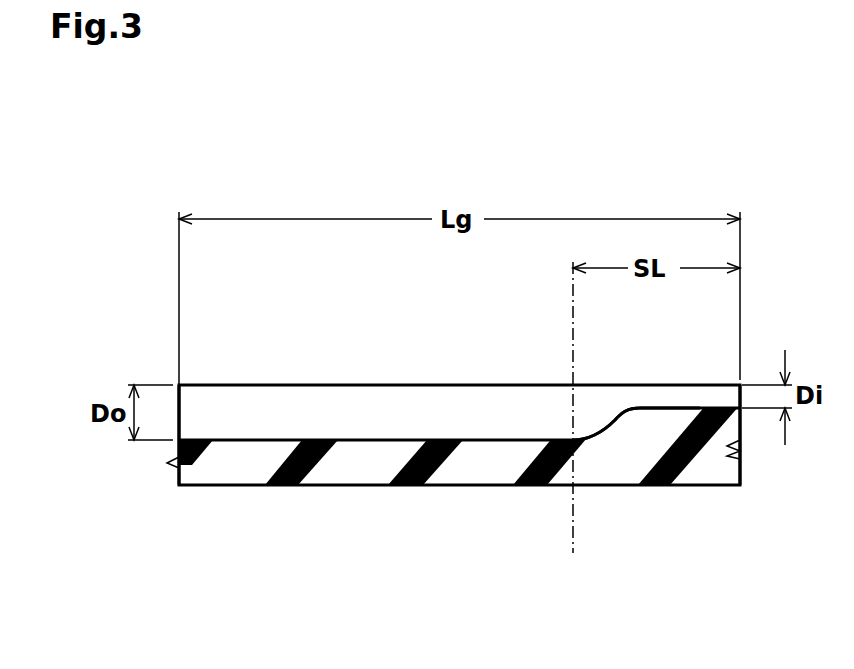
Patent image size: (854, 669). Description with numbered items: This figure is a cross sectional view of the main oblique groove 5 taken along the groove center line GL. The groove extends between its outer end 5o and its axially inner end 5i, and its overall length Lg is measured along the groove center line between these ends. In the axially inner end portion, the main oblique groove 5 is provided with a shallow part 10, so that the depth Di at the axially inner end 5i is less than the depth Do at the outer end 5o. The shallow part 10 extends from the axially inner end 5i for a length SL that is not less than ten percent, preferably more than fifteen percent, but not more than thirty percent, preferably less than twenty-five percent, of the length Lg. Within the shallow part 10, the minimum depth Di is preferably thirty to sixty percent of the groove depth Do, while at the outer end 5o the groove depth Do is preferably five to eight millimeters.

The main oblique groove 5 is at (437, 437).
The outer end 5o is at (171, 378).
The axially inner end 5i is at (742, 378).
The shallow part 10 is at (660, 407).